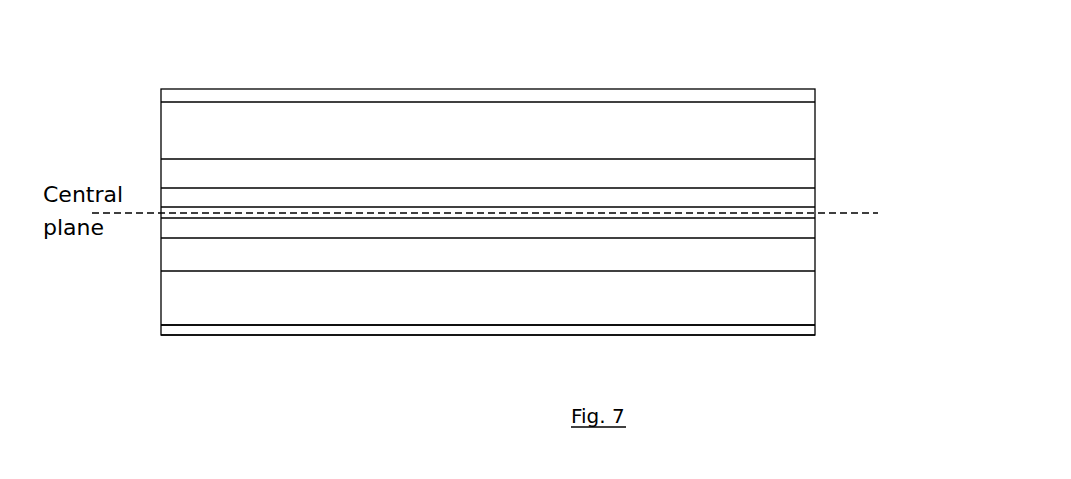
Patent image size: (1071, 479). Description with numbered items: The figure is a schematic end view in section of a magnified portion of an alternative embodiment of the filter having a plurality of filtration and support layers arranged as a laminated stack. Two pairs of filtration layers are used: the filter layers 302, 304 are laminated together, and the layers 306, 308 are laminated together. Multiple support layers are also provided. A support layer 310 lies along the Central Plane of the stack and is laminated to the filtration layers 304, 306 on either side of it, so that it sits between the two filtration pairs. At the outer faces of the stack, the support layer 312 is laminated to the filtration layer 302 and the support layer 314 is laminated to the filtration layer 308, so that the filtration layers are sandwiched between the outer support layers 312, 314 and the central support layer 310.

The filter layer 302 is at (815, 129).
The filter layer 304 is at (815, 175).
The filtration layer 306 is at (815, 252).
The filtration layer 308 is at (815, 295).
The support layer 310 is at (815, 208).
The support layer 312 is at (161, 95).
The support layer 314 is at (161, 330).